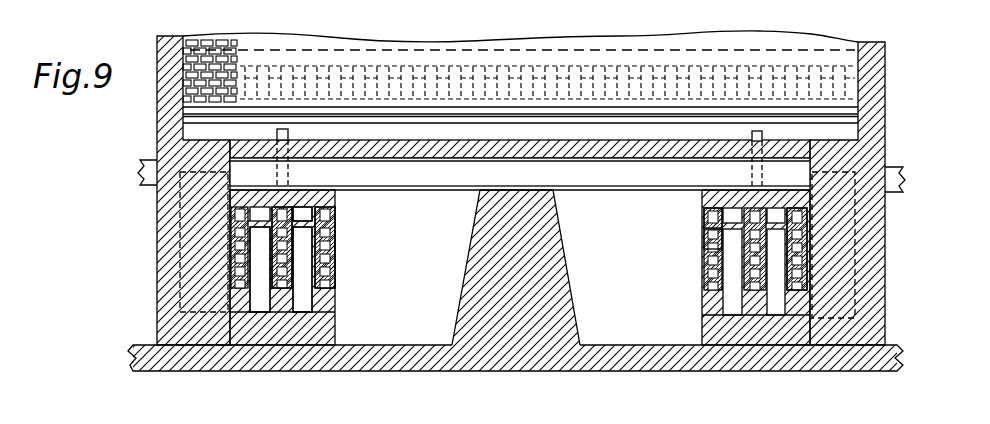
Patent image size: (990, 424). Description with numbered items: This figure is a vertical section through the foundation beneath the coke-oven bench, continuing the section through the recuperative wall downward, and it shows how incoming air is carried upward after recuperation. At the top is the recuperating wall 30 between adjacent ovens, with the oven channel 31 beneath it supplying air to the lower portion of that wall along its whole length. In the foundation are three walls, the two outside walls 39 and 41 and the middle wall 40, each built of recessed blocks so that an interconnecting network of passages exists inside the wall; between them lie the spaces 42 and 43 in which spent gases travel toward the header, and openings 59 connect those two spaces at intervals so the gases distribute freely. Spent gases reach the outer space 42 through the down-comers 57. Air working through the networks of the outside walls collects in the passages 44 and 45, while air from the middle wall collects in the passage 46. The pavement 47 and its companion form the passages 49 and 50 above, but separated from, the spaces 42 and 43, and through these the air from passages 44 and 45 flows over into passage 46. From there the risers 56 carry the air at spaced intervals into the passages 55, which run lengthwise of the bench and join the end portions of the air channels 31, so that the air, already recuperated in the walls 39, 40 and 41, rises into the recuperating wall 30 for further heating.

The recuperating wall 30 is at (287, 82).
The oven channel 31 is at (450, 135).
The outside recuperating wall 39 is at (240, 295).
The middle recuperating wall 40 is at (287, 288).
The outside recuperating wall 41 is at (335, 284).
The outer spent-gas space 42 is at (260, 300).
The spent-gas space 43 is at (300, 300).
The air passage 44 is at (810, 223).
The air passage 45 is at (702, 223).
The middle-wall air passage 46 is at (702, 240).
The pavement 47 is at (756, 267).
The air passage 49 is at (257, 213).
The air passage 50 is at (337, 220).
The longitudinal air passage 55 is at (277, 133).
The riser 56 is at (250, 167).
The down-comer 57 is at (157, 270).
The connecting opening 59 is at (551, 10).